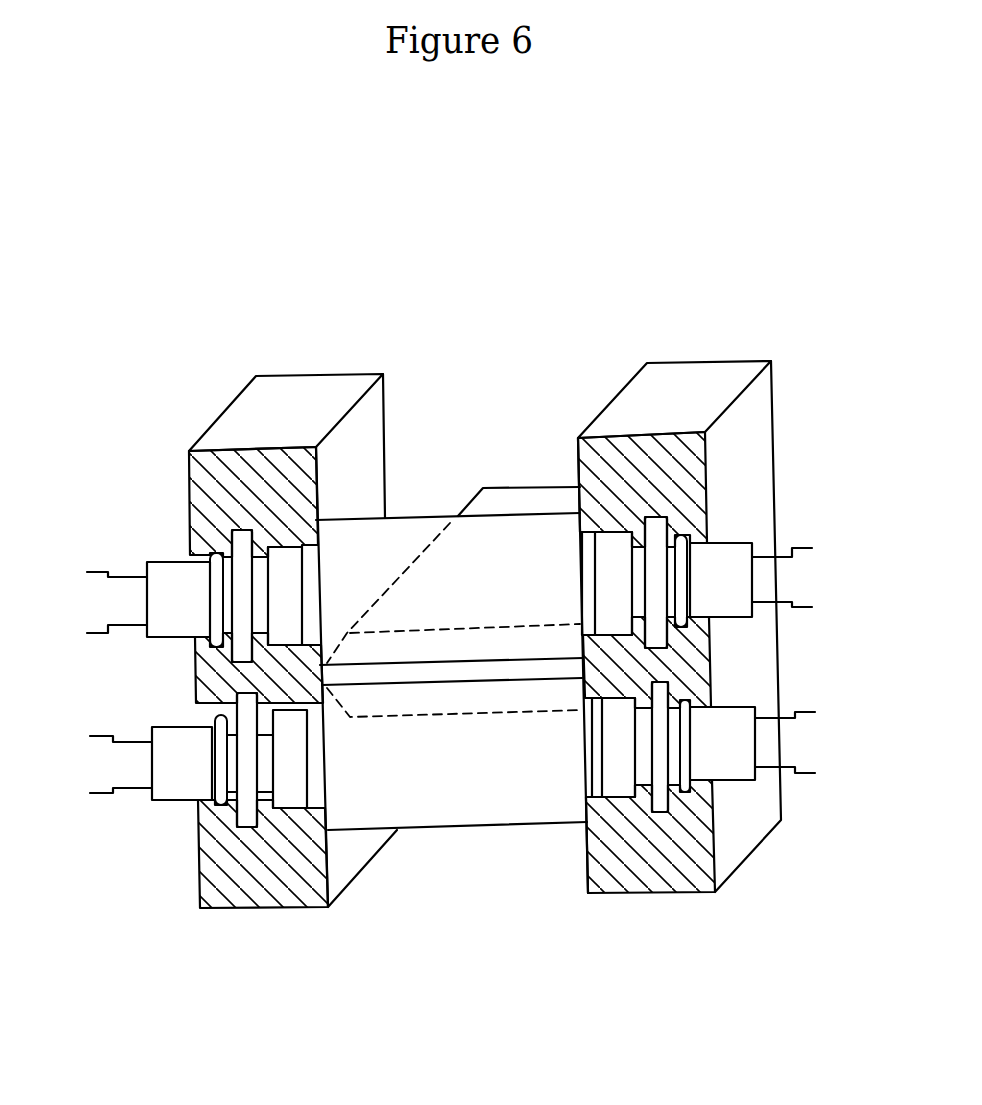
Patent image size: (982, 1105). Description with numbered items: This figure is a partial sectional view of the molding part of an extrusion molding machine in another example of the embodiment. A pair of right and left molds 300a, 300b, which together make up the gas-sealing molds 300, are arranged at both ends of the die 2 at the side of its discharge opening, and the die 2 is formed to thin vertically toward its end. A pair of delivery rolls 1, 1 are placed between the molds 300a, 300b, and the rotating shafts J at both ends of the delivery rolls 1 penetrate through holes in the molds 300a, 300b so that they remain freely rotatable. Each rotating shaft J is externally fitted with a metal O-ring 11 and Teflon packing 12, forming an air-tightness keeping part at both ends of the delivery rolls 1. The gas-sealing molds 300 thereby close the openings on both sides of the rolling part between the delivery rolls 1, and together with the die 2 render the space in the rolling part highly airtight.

The gas-sealing molds 300 is at (768, 217).
The left mold 300a is at (322, 402).
The right mold 300b is at (660, 386).
The delivery roll 1 is at (395, 538).
The die 2 is at (510, 502).
The metal O-ring 11 is at (215, 645).
The Teflon packing 12 is at (242, 543).
The rotating shaft J is at (165, 583).